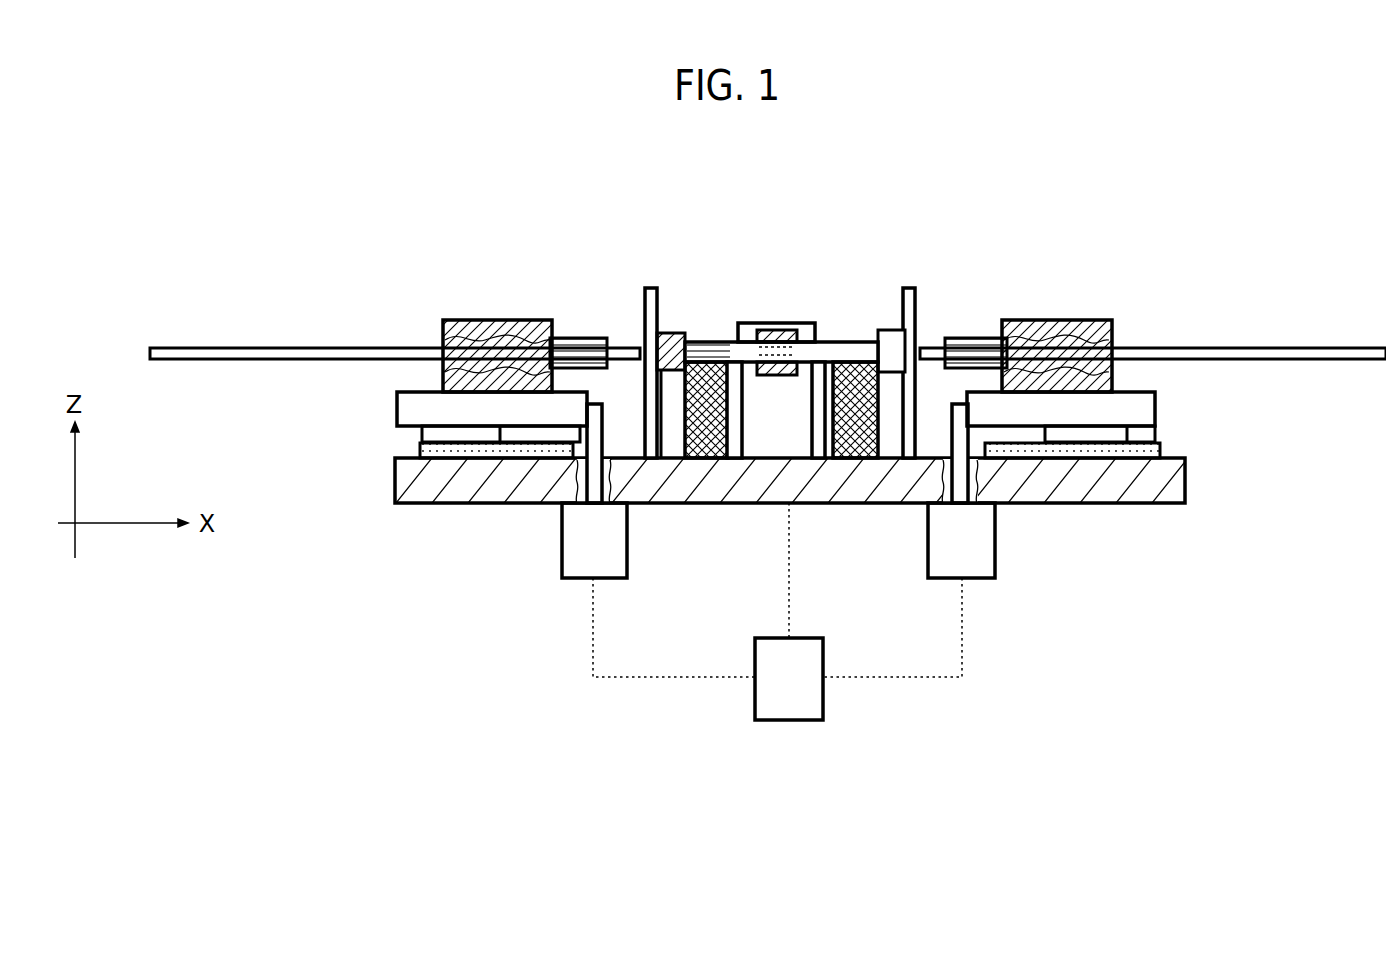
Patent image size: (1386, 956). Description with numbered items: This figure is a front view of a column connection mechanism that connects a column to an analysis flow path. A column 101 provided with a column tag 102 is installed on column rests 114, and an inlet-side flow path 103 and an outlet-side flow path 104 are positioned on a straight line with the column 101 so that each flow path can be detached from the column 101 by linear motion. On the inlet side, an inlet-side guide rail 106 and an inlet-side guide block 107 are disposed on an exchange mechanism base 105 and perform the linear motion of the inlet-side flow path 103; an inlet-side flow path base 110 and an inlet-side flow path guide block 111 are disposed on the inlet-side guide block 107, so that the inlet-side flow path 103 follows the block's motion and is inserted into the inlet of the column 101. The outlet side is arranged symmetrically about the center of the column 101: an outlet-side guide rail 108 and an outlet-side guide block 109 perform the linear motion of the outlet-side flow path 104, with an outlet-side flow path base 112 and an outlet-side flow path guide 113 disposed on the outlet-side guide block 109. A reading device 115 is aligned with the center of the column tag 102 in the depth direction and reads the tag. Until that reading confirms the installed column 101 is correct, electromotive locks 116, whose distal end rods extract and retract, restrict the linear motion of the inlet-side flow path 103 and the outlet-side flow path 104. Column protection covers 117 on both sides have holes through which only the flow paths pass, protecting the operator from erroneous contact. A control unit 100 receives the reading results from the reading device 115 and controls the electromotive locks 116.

The control unit 100 is at (813, 700).
The column 101 is at (699, 343).
The column tag 102 is at (800, 341).
The inlet-side flow path 103 is at (240, 347).
The outlet-side flow path 104 is at (1339, 348).
The exchange mechanism base 105 is at (397, 498).
The inlet-side guide rail 106 is at (413, 449).
The inlet-side guide block 107 is at (440, 432).
The outlet-side guide rail 108 is at (1140, 458).
The outlet-side guide block 109 is at (1143, 436).
The inlet-side flow path base 110 is at (418, 412).
The inlet-side flow path guide block 111 is at (468, 320).
The outlet-side flow path base 112 is at (1140, 408).
The outlet-side flow path guide 113 is at (1050, 320).
The column rest 114 is at (702, 435).
The reading device 115 is at (778, 324).
The electromotive lock 116 is at (620, 553).
The column protection cover 117 is at (647, 292).